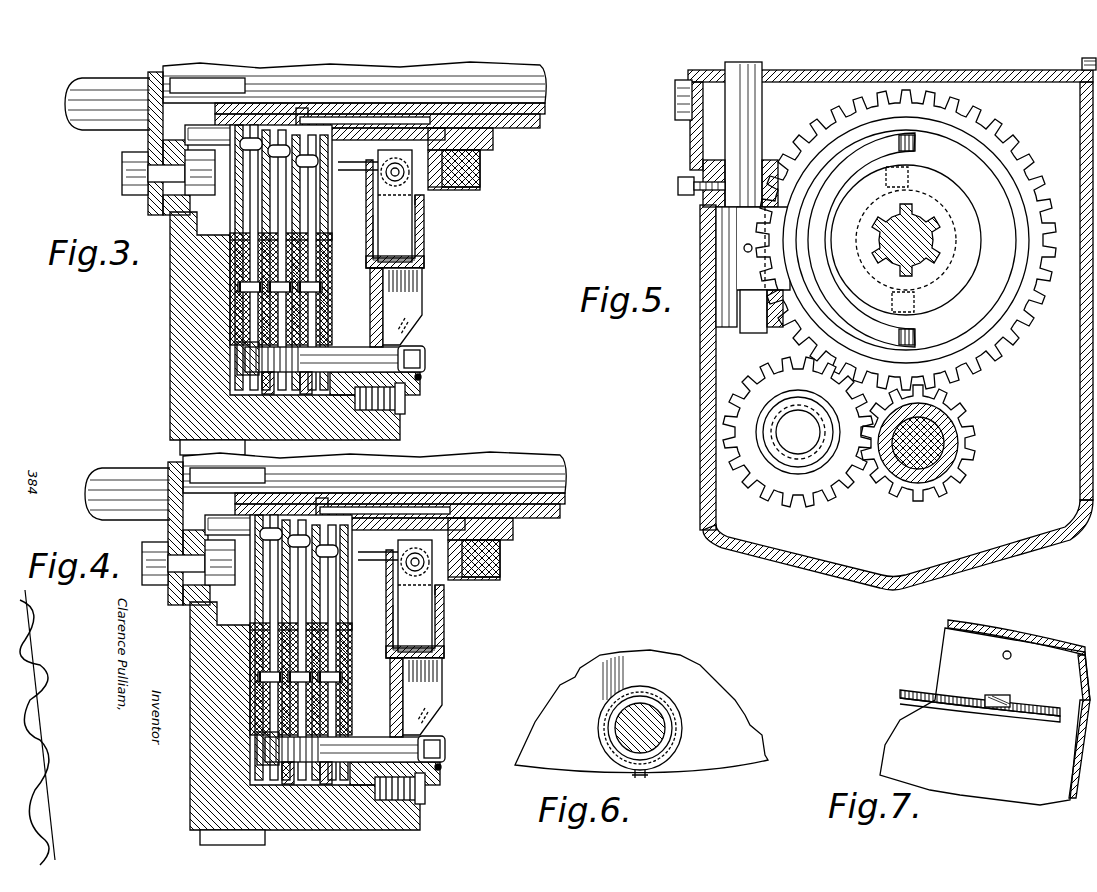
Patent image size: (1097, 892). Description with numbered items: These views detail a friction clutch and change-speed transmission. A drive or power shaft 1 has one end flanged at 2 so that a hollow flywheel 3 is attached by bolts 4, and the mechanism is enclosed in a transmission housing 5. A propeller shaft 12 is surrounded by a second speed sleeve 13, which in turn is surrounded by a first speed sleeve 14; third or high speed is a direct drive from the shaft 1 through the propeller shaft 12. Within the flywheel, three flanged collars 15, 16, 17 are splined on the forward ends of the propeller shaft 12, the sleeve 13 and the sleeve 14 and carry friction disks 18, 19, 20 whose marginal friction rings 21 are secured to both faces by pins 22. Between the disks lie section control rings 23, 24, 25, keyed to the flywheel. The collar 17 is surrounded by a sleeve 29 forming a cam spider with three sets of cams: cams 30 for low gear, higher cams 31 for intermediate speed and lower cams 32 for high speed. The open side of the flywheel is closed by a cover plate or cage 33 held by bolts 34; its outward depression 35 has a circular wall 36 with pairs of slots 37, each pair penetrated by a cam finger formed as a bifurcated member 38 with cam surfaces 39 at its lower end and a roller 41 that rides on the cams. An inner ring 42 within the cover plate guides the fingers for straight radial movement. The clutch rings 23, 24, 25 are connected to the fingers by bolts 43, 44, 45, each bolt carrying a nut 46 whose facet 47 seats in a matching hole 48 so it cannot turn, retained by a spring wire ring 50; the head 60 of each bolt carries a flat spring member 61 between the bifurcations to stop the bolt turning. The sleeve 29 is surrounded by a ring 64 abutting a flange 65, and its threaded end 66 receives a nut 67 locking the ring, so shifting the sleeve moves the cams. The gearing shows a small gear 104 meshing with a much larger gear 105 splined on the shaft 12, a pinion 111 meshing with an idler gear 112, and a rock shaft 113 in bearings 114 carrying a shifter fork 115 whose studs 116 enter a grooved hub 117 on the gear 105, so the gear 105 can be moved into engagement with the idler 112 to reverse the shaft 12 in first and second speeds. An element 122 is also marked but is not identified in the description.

In FIG. 3, the drive or power shaft 1 is at (97, 130).
In FIG. 4, the drive or power shaft 1 is at (126, 494).
In FIG. 3, the flange 2 is at (150, 200).
In FIG. 4, the flange 2 is at (186, 543).
In FIG. 3, the hollow flywheel 3 is at (172, 288).
In FIG. 4, the hollow flywheel 3 is at (293, 723).
In FIG. 3, the bolts 4 is at (122, 175).
In FIG. 4, the bolts 4 is at (183, 580).
In FIG. 5, the transmission housing 5 is at (700, 487).
In FIG. 3, the propeller shaft 12 is at (412, 100).
In FIG. 4, the propeller shaft 12 is at (374, 464).
In FIG. 5, the propeller shaft 12 is at (926, 252).
In FIG. 3, the second speed sleeve 13 is at (545, 106).
In FIG. 4, the second speed sleeve 13 is at (417, 497).
In FIG. 3, the first speed sleeve 14 is at (540, 122).
In FIG. 4, the first speed sleeve 14 is at (415, 517).
In FIG. 3, the flanged collar 15 is at (207, 140).
In FIG. 4, the flanged collar 15 is at (228, 535).
In FIG. 3, the flanged collar 16 is at (272, 135).
In FIG. 4, the flanged collar 16 is at (285, 503).
In FIG. 3, the flanged collar 17 is at (300, 150).
In FIG. 4, the flanged collar 17 is at (327, 508).
In FIG. 3, the friction disk 18 is at (236, 230).
In FIG. 4, the friction disk 18 is at (255, 647).
In FIG. 3, the friction disk 19 is at (258, 209).
In FIG. 4, the friction disk 19 is at (263, 647).
In FIG. 3, the friction disk 20 is at (364, 250).
In FIG. 4, the friction disk 20 is at (378, 662).
In FIG. 3, the marginal friction rings 21 is at (235, 268).
In FIG. 4, the marginal friction rings 21 is at (256, 679).
In FIG. 4, the pins 22 is at (256, 681).
In FIG. 3, the section control ring 23 is at (236, 325).
In FIG. 3, the section control ring 24 is at (236, 308).
In FIG. 3, the section control ring 25 is at (330, 258).
In FIG. 4, the section control ring 25 is at (330, 652).
In FIG. 3, the sleeve 29 is at (345, 126).
In FIG. 4, the sleeve 29 is at (385, 476).
In FIG. 3, the cams 30 is at (272, 395).
In FIG. 4, the cams 31 is at (394, 596).
In FIG. 3, the cams 32 is at (350, 168).
In FIG. 3, the cover plate or cage 33 is at (412, 380).
In FIG. 4, the cover plate or cage 33 is at (412, 743).
In FIG. 7, the cover plate or cage 33 is at (985, 716).
In FIG. 3, the bolts 34 is at (398, 414).
In FIG. 4, the bolts 34 is at (411, 795).
In FIG. 3, the outward depression 35 is at (425, 263).
In FIG. 4, the outward depression 35 is at (437, 649).
In FIG. 7, the outward depression 35 is at (983, 648).
In FIG. 3, the circular wall 36 is at (418, 272).
In FIG. 7, the circular wall 36 is at (928, 690).
In FIG. 7, the slots 37 is at (1000, 700).
In FIG. 3, the bifurcated member 38 is at (421, 307).
In FIG. 4, the bifurcated member 38 is at (441, 696).
In FIG. 3, the cam surfaces 39 is at (418, 323).
In FIG. 4, the cam surfaces 39 is at (449, 718).
In FIG. 3, the roller 41 is at (378, 188).
In FIG. 4, the roller 41 is at (395, 600).
In FIG. 3, the inner ring 42 is at (366, 243).
In FIG. 4, the inner ring 42 is at (401, 604).
In FIG. 3, the bolt 43 is at (345, 360).
In FIG. 4, the bolt 44 is at (342, 735).
In FIG. 6, the bolt 45 is at (628, 717).
In FIG. 3, the nut 46 is at (302, 395).
In FIG. 6, the nut 46 is at (670, 735).
In FIG. 3, the facet 47 is at (245, 350).
In FIG. 6, the facet 47 is at (650, 776).
In FIG. 4, the hole 48 is at (222, 748).
In FIG. 4, the spring wire ring 50 is at (318, 805).
In FIG. 6, the spring wire ring 50 is at (682, 716).
In FIG. 3, the bolt head 60 is at (426, 355).
In FIG. 4, the bolt head 60 is at (452, 748).
In FIG. 3, the flat spring member 61 is at (422, 377).
In FIG. 4, the flat spring member 61 is at (460, 762).
In FIG. 3, the ring 64 is at (458, 188).
In FIG. 4, the ring 64 is at (482, 590).
In FIG. 3, the flange 65 is at (432, 190).
In FIG. 4, the flange 65 is at (460, 596).
In FIG. 3, the threaded end 66 is at (493, 140).
In FIG. 4, the threaded end 66 is at (493, 549).
In FIG. 3, the nut 67 is at (481, 175).
In FIG. 4, the nut 67 is at (499, 558).
In FIG. 5, the small gear 104 is at (880, 482).
In FIG. 5, the gear 105 is at (1000, 352).
In FIG. 5, the pinion 111 is at (958, 443).
In FIG. 5, the idler gear 112 is at (750, 378).
In FIG. 5, the rock shaft 113 is at (725, 138).
In FIG. 5, the bearings 114 is at (694, 196).
In FIG. 5, the shifter fork 115 is at (832, 170).
In FIG. 5, the studs 116 is at (908, 177).
In FIG. 5, the grooved hub 117 is at (956, 256).
In FIG. 3, the hole 122 is at (427, 205).
In FIG. 4, the hole 122 is at (464, 608).
In FIG. 7, the hole 122 is at (1012, 653).